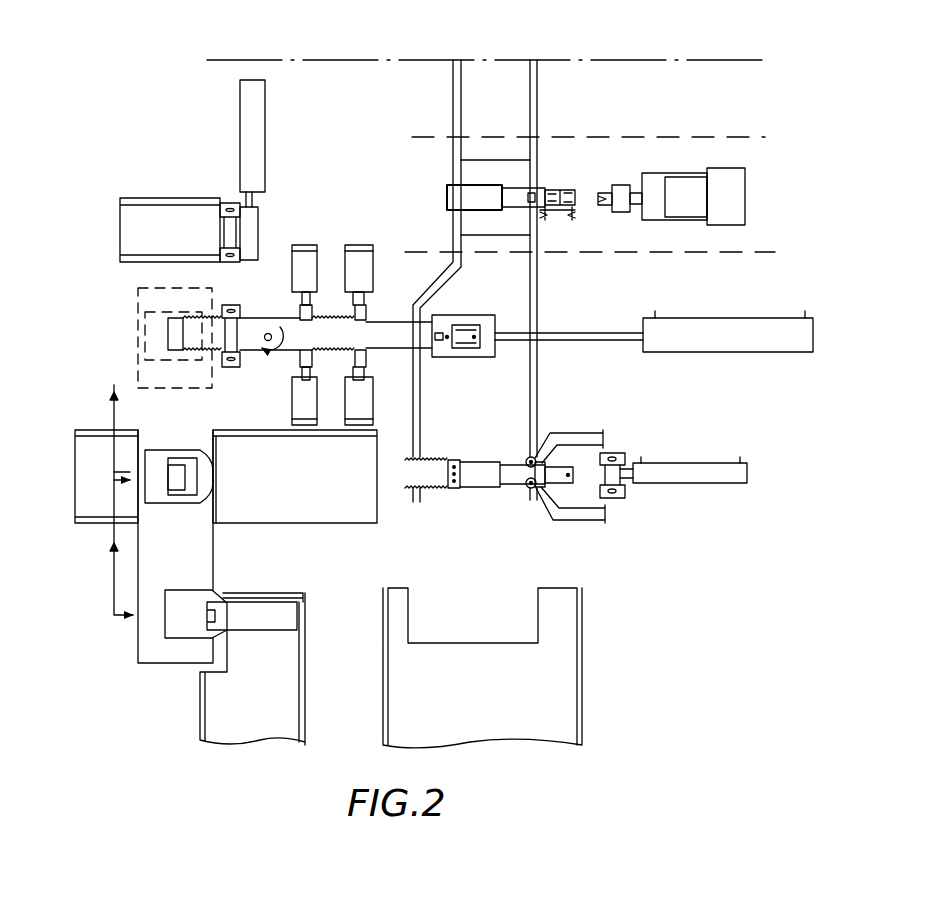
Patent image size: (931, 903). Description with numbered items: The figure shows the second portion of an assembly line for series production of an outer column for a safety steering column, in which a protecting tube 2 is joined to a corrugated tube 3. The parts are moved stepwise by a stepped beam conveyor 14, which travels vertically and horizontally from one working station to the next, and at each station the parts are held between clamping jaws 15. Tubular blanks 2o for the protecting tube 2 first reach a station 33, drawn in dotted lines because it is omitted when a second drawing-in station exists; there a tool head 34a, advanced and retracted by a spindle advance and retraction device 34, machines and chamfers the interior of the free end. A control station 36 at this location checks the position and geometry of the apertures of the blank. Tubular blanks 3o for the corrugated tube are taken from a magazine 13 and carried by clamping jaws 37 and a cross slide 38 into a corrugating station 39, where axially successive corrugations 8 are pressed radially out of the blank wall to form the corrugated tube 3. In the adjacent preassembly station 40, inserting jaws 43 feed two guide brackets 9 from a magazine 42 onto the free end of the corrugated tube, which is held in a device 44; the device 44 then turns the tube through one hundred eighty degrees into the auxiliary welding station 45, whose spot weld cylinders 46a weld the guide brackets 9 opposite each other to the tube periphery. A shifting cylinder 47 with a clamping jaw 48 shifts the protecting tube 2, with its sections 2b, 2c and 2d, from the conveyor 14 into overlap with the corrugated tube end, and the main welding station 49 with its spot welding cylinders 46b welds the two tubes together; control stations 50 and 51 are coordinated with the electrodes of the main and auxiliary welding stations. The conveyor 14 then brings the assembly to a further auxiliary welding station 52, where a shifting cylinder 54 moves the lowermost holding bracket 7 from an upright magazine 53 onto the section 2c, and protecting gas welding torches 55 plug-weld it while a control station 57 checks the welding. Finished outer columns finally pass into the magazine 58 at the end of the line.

The protecting tube 2 is at (488, 512).
The section of protecting tube 2b is at (391, 329).
The middle section of protecting tube 2c is at (426, 333).
The end section of protecting tube 2d is at (463, 325).
The tubular blank 2o is at (478, 195).
The corrugated tube 3 is at (197, 332).
The holding bracket 7 is at (527, 462).
The corrugations 8 is at (430, 460).
The guide brackets 9 is at (230, 208).
The magazine 13 is at (265, 692).
The stepped beam conveyor 14 is at (537, 93).
The clamping jaws 15 is at (504, 170).
The tubular blank 3o is at (290, 612).
The station 33 is at (711, 162).
The spindle advance and retraction device 34 is at (690, 177).
The tool head 34a is at (621, 185).
The control station 36 is at (562, 222).
The clamping jaws 37 is at (140, 572).
The cross slide 38 is at (96, 488).
The corrugating station 39 is at (292, 485).
The preassembly station 40 is at (133, 283).
The magazine 42 is at (155, 233).
The inserting jaws 43 is at (242, 207).
The device 44 is at (283, 345).
The auxiliary welding station 45 is at (304, 240).
The spot weld cylinders 46a is at (310, 260).
The spot welding cylinders 46b is at (362, 262).
The shifting cylinder 47 is at (732, 352).
The clamping jaw 48 is at (474, 350).
The main welding station 49 is at (359, 240).
The control station 50 is at (360, 378).
The control station 51 is at (356, 304).
The auxiliary welding station 52 is at (762, 475).
The magazine 53 is at (618, 453).
The shifting cylinder 54 is at (683, 483).
The protecting gas welding torches 55 is at (575, 505).
The control station 57 is at (530, 488).
The magazine 58 is at (479, 675).